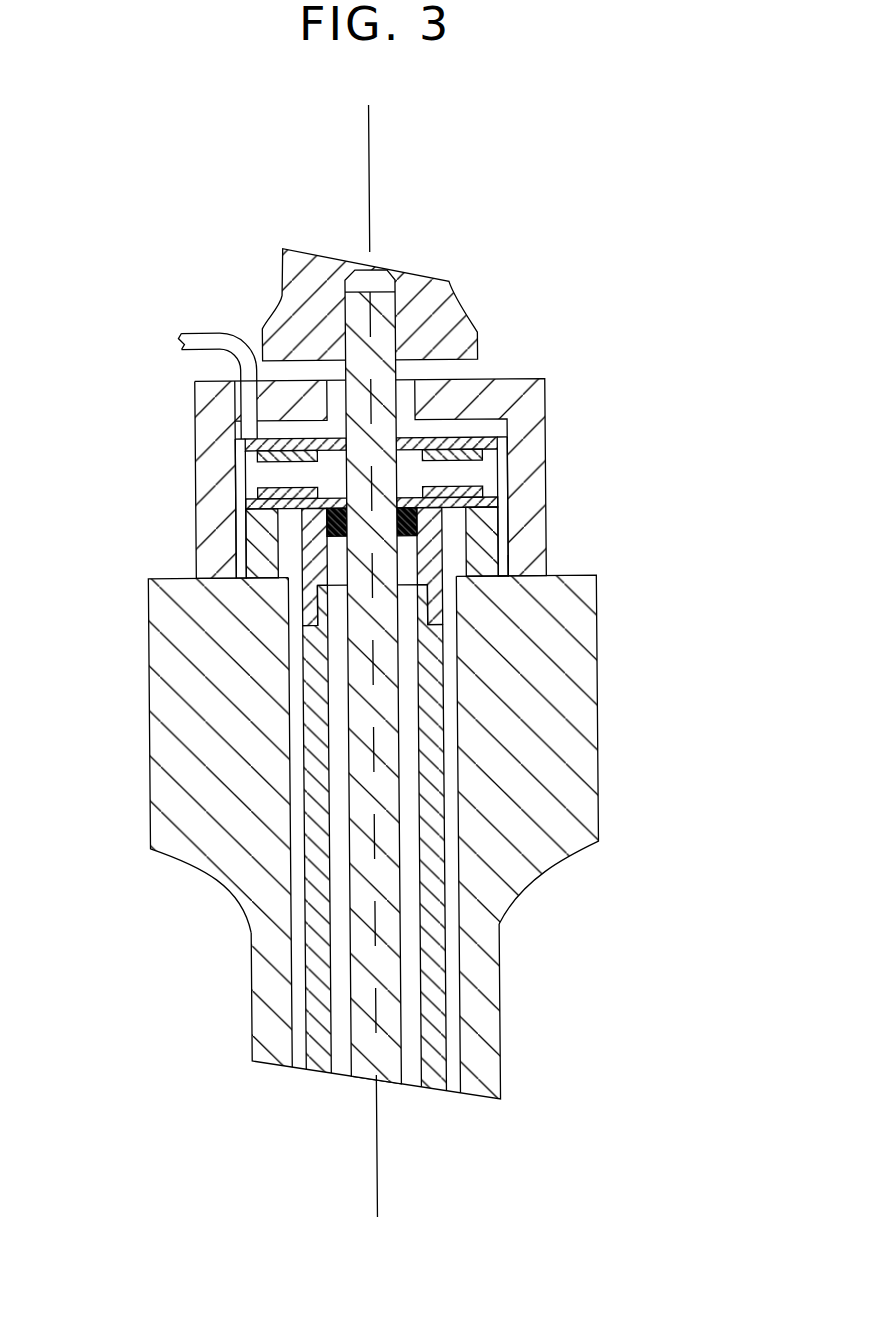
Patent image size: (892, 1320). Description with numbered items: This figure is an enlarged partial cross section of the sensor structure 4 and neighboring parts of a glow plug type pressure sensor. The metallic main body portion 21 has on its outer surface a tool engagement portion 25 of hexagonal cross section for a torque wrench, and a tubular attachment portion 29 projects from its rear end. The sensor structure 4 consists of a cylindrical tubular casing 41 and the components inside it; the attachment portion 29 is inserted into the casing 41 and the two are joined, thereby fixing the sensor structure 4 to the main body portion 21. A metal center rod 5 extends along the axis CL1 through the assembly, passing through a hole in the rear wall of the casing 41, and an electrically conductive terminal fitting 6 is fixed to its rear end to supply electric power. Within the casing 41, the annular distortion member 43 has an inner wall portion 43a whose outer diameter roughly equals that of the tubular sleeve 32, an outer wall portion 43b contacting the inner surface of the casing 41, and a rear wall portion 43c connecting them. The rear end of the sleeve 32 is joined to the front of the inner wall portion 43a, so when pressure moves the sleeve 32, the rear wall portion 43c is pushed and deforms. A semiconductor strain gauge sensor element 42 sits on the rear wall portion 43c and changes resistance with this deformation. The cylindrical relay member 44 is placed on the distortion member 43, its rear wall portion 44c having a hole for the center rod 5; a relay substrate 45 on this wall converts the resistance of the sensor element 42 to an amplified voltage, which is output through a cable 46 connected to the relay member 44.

The axis CL1 is at (373, 145).
The sensor structure 4 is at (549, 391).
The center rod 5 is at (348, 969).
The terminal fitting 6 is at (480, 318).
The main body portion 21 is at (498, 1027).
The tool engagement portion 25 is at (597, 718).
The attachment portion 29 is at (507, 556).
The sleeve 32 is at (448, 951).
The casing 41 is at (197, 392).
The sensor element 42 is at (458, 478).
The distortion member 43 is at (262, 555).
The inner wall portion 43a is at (329, 521).
The outer wall portion 43b is at (295, 538).
The rear wall portion 43c is at (247, 502).
The relay member 44 is at (237, 470).
The rear wall portion 44c is at (266, 437).
The relay substrate 45 is at (473, 456).
The cable 46 is at (224, 331).